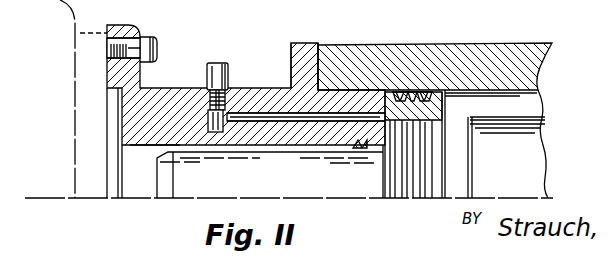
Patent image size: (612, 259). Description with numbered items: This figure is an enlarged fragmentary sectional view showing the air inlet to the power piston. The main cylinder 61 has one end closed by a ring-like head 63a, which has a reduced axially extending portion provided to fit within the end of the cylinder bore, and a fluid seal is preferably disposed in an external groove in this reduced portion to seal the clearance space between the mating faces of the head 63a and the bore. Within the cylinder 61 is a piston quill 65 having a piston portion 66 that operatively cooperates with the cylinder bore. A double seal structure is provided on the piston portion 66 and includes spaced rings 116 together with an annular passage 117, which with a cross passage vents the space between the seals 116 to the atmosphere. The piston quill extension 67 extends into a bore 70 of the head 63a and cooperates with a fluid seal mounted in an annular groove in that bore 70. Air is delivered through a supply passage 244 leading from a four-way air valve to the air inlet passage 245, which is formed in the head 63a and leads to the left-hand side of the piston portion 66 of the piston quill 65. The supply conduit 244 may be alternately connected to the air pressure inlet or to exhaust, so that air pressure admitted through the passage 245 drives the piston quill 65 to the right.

The main cylinder 61 is at (530, 50).
The ring-like head 63a is at (305, 50).
The piston quill 65 is at (531, 136).
The piston portion 66 is at (443, 104).
The piston quill extension 67 is at (284, 181).
The bore 70 is at (152, 146).
The spaced rings 116 is at (400, 93).
The annular passage 117 is at (414, 91).
The supply passage 244 is at (213, 72).
The air inlet passage 245 is at (255, 115).